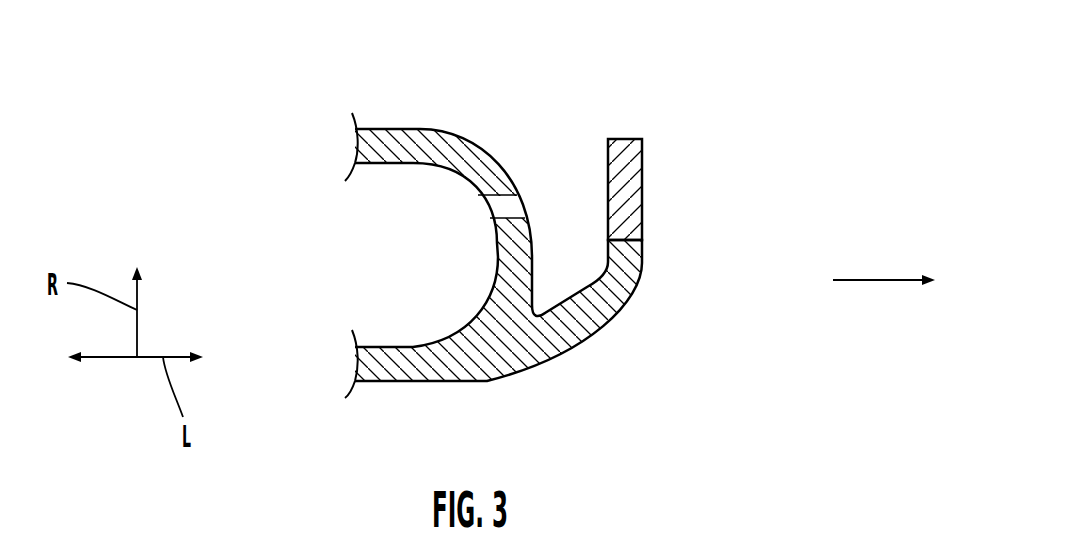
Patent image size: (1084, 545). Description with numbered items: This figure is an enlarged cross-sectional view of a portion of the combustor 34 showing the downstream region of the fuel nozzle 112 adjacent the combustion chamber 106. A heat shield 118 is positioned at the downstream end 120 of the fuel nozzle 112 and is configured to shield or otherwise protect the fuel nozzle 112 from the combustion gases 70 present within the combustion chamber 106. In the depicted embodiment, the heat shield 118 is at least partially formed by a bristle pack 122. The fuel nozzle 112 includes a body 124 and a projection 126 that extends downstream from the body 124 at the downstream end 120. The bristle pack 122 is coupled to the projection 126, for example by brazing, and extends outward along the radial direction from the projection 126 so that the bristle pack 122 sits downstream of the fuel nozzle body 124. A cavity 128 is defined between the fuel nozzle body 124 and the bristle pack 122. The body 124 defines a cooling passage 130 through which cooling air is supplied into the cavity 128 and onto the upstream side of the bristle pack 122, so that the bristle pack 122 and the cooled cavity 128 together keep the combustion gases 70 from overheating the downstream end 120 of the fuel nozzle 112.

The seat assembly 34 is at (268, 124).
The combustion gases 70 is at (868, 280).
The combustion chamber 106 is at (809, 181).
The fuel nozzle 112 is at (432, 116).
The heat shield 118 is at (698, 204).
The downstream end 120 is at (698, 283).
The bristle pack 122 is at (643, 182).
The body 124 is at (488, 157).
The projection 126 is at (610, 317).
The cavity 128 is at (578, 265).
The cooling passage 130 is at (555, 195).